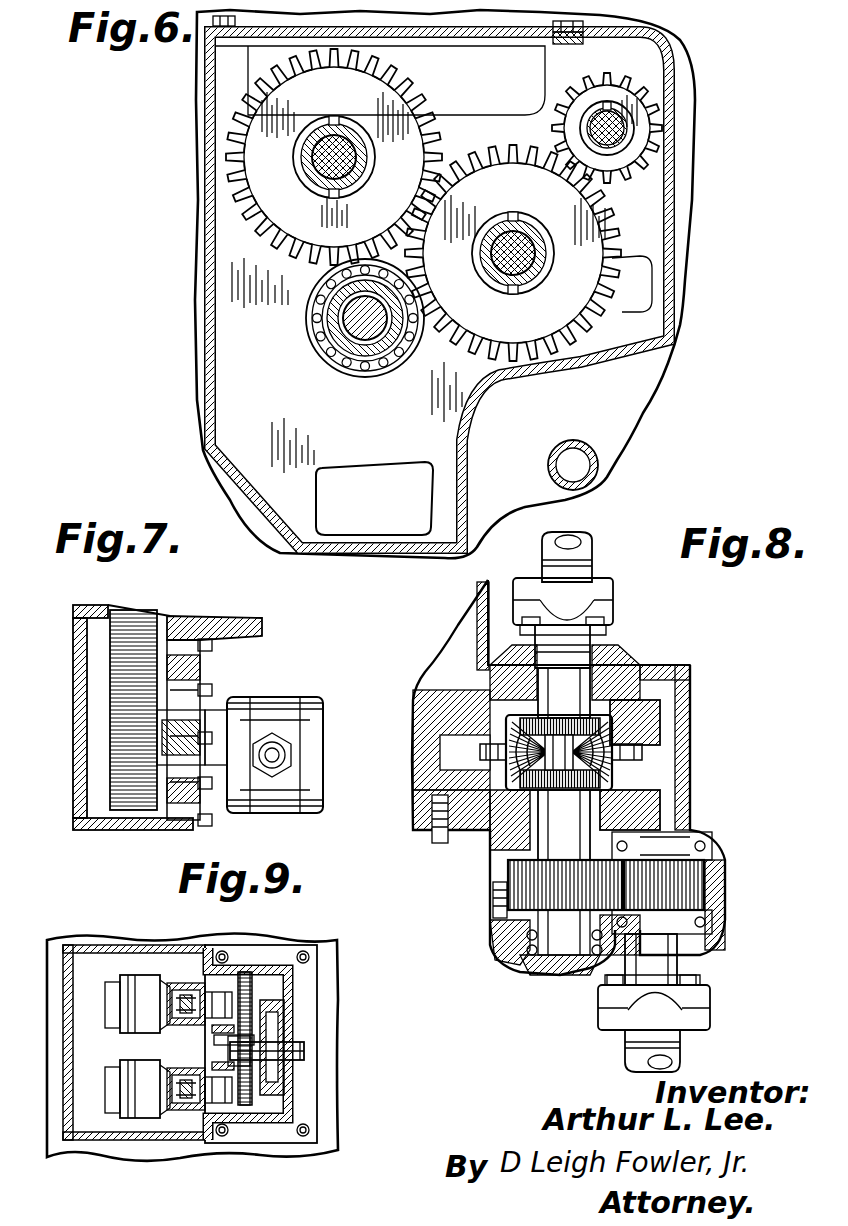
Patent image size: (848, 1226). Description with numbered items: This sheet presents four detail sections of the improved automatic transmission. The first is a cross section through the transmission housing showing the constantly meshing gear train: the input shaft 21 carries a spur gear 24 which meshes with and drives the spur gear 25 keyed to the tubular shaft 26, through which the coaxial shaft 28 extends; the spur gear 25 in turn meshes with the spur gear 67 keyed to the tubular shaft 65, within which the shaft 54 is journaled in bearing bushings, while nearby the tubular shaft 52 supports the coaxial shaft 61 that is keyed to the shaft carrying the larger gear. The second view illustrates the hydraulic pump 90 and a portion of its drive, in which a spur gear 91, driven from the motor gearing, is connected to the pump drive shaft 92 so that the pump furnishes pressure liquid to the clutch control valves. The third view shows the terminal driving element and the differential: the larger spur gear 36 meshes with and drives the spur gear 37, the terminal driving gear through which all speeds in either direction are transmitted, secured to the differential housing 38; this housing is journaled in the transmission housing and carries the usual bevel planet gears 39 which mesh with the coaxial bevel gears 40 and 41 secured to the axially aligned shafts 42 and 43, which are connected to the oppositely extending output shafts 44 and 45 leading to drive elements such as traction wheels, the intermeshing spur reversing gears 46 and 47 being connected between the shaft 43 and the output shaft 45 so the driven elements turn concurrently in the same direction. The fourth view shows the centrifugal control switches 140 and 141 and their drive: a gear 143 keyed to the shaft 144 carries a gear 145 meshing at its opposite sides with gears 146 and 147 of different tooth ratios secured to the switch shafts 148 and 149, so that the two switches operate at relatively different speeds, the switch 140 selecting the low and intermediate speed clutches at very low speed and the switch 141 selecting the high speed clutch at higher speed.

In FIG. 6, the input shaft 21 is at (596, 130).
In FIG. 6, the spur gear 24 is at (592, 80).
In FIG. 6, the spur gear 25 is at (618, 230).
In FIG. 6, the tubular shaft 26 is at (500, 265).
In FIG. 6, the coaxial shaft 28 is at (522, 242).
In FIG. 6, the tubular shaft 52 is at (362, 348).
In FIG. 6, the shaft 54 is at (326, 143).
In FIG. 6, the coaxial shaft 61 is at (340, 340).
In FIG. 6, the tubular shaft 65 is at (366, 165).
In FIG. 6, the spur gear 67 is at (412, 100).
In FIG. 7, the hydraulic pump 90 is at (312, 758).
In FIG. 7, the spur gear 91 is at (133, 790).
In FIG. 7, the pump drive shaft 92 is at (198, 700).
In FIG. 8, the spur gear 36 is at (440, 700).
In FIG. 8, the spur gear 37 is at (660, 720).
In FIG. 8, the differential housing 38 is at (630, 795).
In FIG. 8, the bevel planet gears 39 is at (495, 752).
In FIG. 8, the bevel gear 40 is at (592, 700).
In FIG. 8, the bevel gear 41 is at (523, 820).
In FIG. 8, the shaft 42 is at (578, 688).
In FIG. 8, the shaft 43 is at (555, 815).
In FIG. 8, the output shaft 44 is at (585, 558).
In FIG. 8, the output shaft 45 is at (630, 1052).
In FIG. 8, the spur reversing gear 46 is at (550, 887).
In FIG. 8, the spur reversing gear 47 is at (660, 887).
In FIG. 9, the centrifugal switch 140 is at (135, 982).
In FIG. 9, the centrifugal switch 141 is at (135, 1098).
In FIG. 9, the gear 143 is at (282, 1022).
In FIG. 9, the shaft 144 is at (292, 1054).
In FIG. 9, the gear 145 is at (225, 1041).
In FIG. 9, the gear 146 is at (252, 985).
In FIG. 9, the gear 147 is at (244, 1105).
In FIG. 9, the shaft 148 is at (216, 990).
In FIG. 9, the shaft 149 is at (212, 1092).